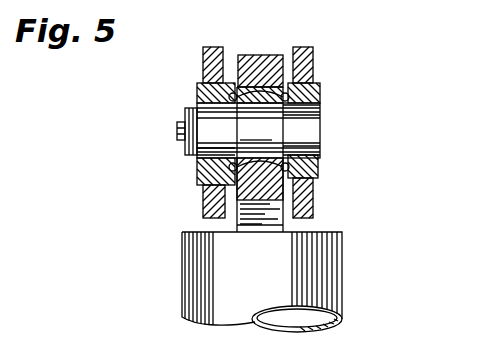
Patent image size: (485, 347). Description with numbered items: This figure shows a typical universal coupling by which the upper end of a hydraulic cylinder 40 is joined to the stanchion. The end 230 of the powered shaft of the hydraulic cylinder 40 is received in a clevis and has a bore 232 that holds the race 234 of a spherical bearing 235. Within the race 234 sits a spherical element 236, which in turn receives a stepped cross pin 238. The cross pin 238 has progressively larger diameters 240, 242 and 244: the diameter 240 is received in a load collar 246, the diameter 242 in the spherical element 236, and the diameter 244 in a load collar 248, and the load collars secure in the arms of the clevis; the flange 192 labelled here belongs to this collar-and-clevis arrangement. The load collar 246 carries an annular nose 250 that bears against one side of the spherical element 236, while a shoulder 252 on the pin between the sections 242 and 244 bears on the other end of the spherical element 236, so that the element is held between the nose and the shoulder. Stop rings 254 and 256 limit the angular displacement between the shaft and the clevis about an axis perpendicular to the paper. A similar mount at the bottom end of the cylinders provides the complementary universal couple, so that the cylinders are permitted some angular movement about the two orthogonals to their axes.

The hydraulic cylinder 40 is at (342, 270).
The sprocket flange 192 is at (313, 66).
The end of powered shaft 230 is at (286, 222).
The bore 232 is at (300, 180).
The race 234 is at (270, 213).
The spherical bearing 235 is at (202, 192).
The spherical element 236 is at (320, 152).
The stepped cross pin 238 is at (318, 108).
The diameter of cross pin 240 is at (312, 130).
The diameter of cross pin 242 is at (259, 130).
The diameter of cross pin 244 is at (215, 148).
The load collar 246 is at (316, 86).
The load collar 248 is at (197, 93).
The annular nose 250 is at (317, 172).
The shoulder 252 is at (187, 112).
The stop ring 254 is at (232, 90).
The stop ring 256 is at (288, 90).